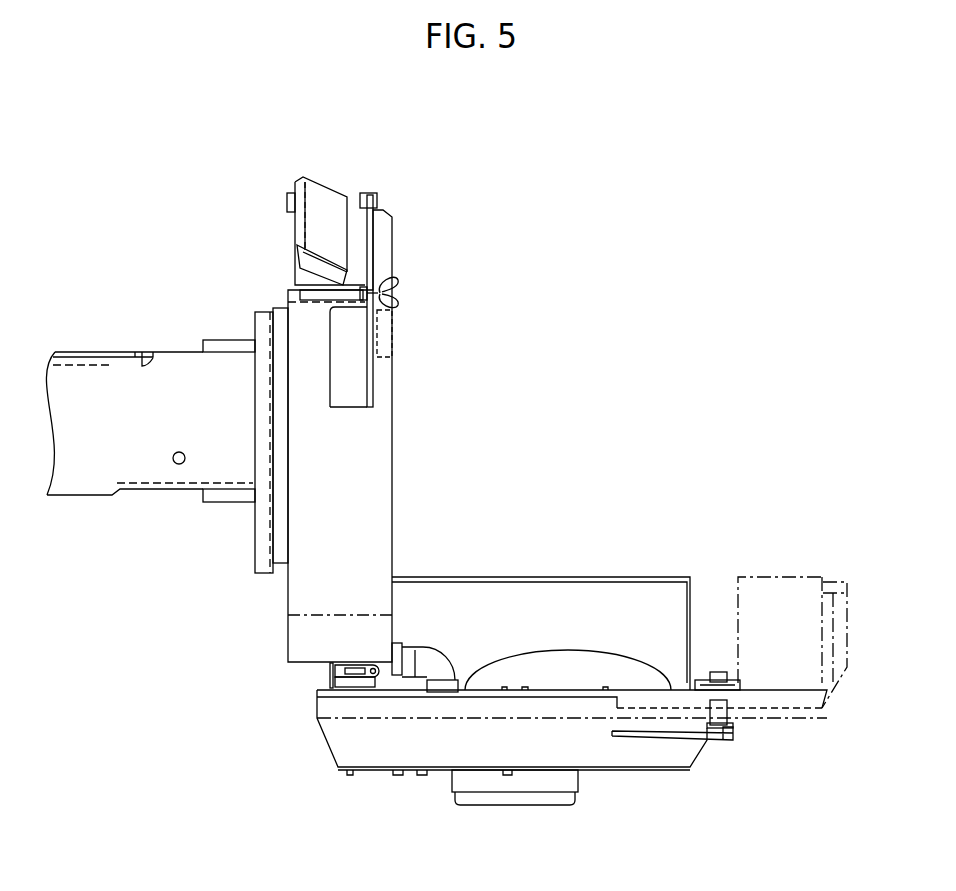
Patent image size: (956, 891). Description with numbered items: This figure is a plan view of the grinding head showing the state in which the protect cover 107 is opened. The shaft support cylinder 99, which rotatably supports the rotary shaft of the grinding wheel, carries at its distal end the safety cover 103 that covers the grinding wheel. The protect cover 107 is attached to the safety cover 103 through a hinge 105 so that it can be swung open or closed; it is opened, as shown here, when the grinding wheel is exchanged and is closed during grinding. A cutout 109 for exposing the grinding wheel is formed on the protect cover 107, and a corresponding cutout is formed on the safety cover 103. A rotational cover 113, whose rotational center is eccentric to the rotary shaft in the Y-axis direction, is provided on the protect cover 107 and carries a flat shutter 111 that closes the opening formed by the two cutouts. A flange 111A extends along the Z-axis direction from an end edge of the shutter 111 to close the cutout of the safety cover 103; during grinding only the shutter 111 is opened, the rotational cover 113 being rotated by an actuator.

The shaft support cylinder 99 is at (125, 376).
The safety cover 103 is at (303, 545).
The hinge 105 is at (368, 660).
The protect cover 107 is at (327, 708).
The cutout 109 is at (690, 627).
The shutter 111 is at (755, 710).
The flange 111A is at (797, 577).
The rotational cover 113 is at (608, 755).